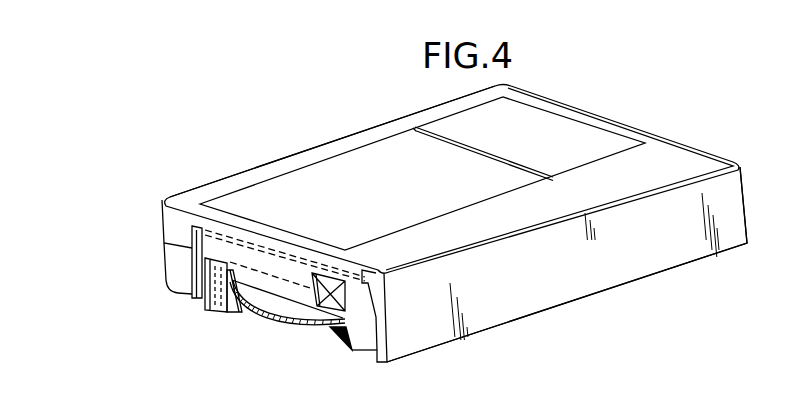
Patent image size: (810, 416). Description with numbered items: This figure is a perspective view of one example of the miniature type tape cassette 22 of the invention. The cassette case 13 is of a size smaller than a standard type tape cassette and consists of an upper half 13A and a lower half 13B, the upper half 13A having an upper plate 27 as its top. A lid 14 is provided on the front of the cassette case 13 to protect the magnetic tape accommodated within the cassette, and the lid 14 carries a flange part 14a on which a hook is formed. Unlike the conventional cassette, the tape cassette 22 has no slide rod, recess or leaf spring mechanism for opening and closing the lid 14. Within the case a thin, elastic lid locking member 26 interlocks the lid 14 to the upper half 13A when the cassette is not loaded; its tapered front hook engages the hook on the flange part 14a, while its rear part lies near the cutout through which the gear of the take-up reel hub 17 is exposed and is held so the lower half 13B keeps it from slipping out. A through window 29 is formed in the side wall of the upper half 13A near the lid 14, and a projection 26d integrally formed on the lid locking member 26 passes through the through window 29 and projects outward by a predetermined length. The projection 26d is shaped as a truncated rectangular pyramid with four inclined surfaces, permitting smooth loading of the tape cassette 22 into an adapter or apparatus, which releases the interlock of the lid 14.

The cassette case 13 is at (197, 183).
The upper half 13A is at (175, 225).
The lower half 13B is at (177, 271).
The lid 14 is at (565, 290).
The flange part 14a is at (377, 300).
The take-up reel hub 17 is at (282, 308).
The miniature type tape cassette 22 is at (331, 124).
The lid locking member 26 is at (230, 249).
The projection 26d is at (320, 287).
The upper plate 27 is at (398, 123).
The through window 29 is at (333, 277).